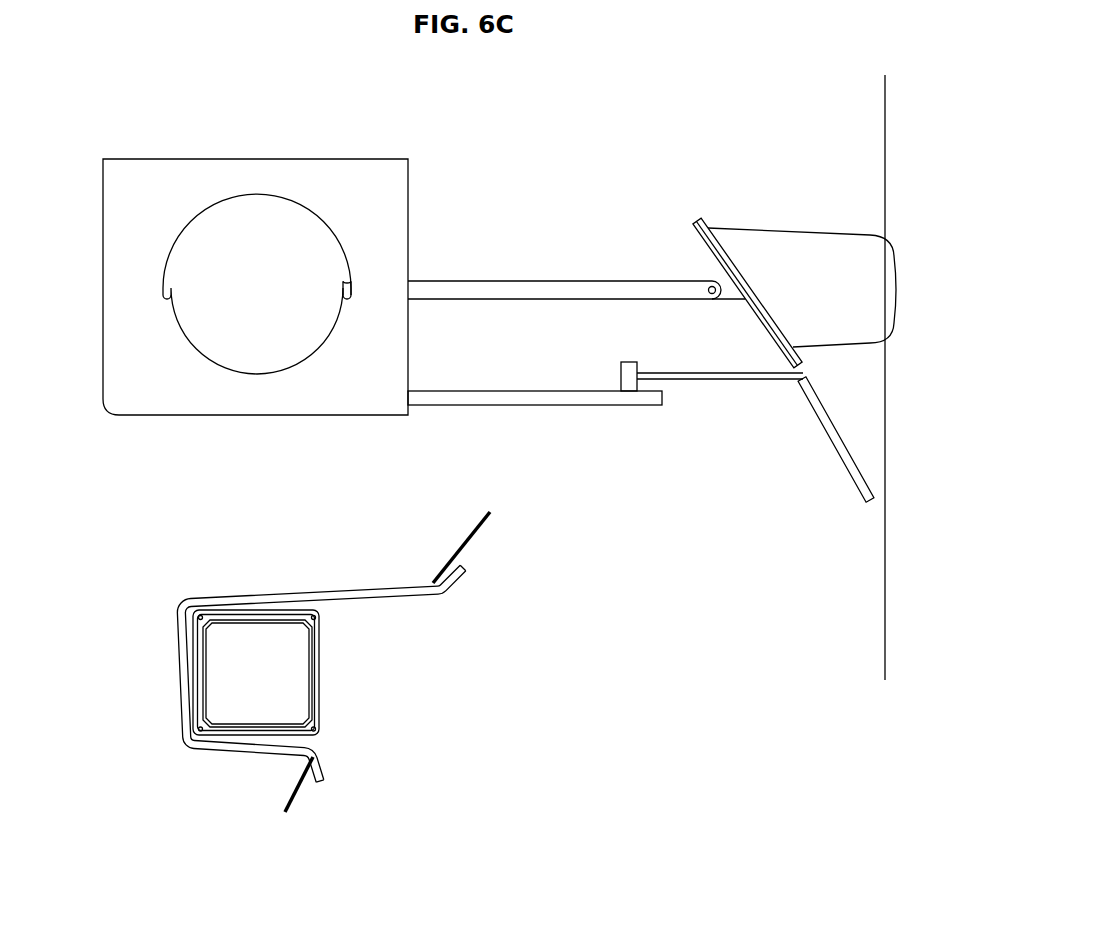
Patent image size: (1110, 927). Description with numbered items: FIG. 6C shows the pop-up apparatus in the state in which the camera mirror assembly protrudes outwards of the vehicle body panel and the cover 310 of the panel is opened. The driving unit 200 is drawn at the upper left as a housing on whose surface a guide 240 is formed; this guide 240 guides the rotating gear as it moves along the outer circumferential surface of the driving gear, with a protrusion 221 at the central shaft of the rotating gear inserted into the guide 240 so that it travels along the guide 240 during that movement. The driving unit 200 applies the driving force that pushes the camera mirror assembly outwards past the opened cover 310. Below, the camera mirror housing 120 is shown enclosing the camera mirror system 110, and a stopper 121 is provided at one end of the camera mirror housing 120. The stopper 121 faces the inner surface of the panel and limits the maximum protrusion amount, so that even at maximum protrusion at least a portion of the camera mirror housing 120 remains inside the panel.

The driving unit 200 is at (296, 138).
The guide 240 is at (173, 248).
The protrusion 221 is at (352, 280).
The stopper 121 is at (700, 217).
The cover 310 is at (808, 398).
The camera mirror housing 120 is at (257, 595).
The camera mirror system 110 is at (193, 663).